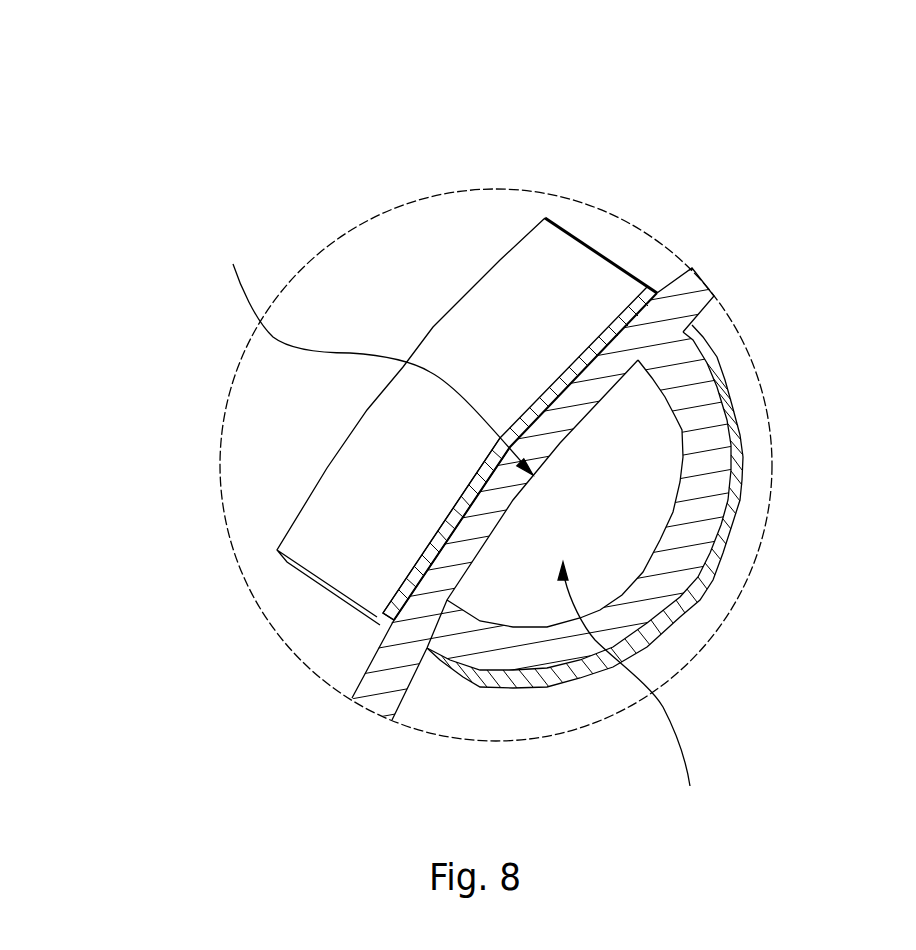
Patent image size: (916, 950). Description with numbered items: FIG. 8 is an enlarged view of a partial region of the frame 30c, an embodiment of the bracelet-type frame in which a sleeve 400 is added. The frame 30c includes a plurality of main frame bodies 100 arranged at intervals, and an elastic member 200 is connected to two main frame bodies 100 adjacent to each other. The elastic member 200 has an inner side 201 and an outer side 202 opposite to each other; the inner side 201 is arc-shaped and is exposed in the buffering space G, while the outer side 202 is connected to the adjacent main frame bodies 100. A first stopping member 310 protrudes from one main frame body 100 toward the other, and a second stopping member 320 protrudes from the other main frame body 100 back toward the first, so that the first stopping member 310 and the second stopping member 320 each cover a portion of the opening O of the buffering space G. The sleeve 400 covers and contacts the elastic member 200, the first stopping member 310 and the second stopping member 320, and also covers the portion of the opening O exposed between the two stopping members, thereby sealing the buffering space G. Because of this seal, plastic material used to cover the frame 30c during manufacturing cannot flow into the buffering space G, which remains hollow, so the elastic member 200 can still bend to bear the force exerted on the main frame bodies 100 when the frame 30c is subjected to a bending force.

The frame 30c is at (74, 63).
The main frame body 100 is at (662, 262).
The sleeve 400 is at (500, 297).
The first stopping member 310 is at (577, 410).
The second stopping member 320 is at (440, 548).
The elastic member 200 is at (700, 533).
The inner side 201 is at (698, 462).
The outer side 202 is at (698, 578).
The opening O is at (377, 355).
The buffering space G is at (629, 690).